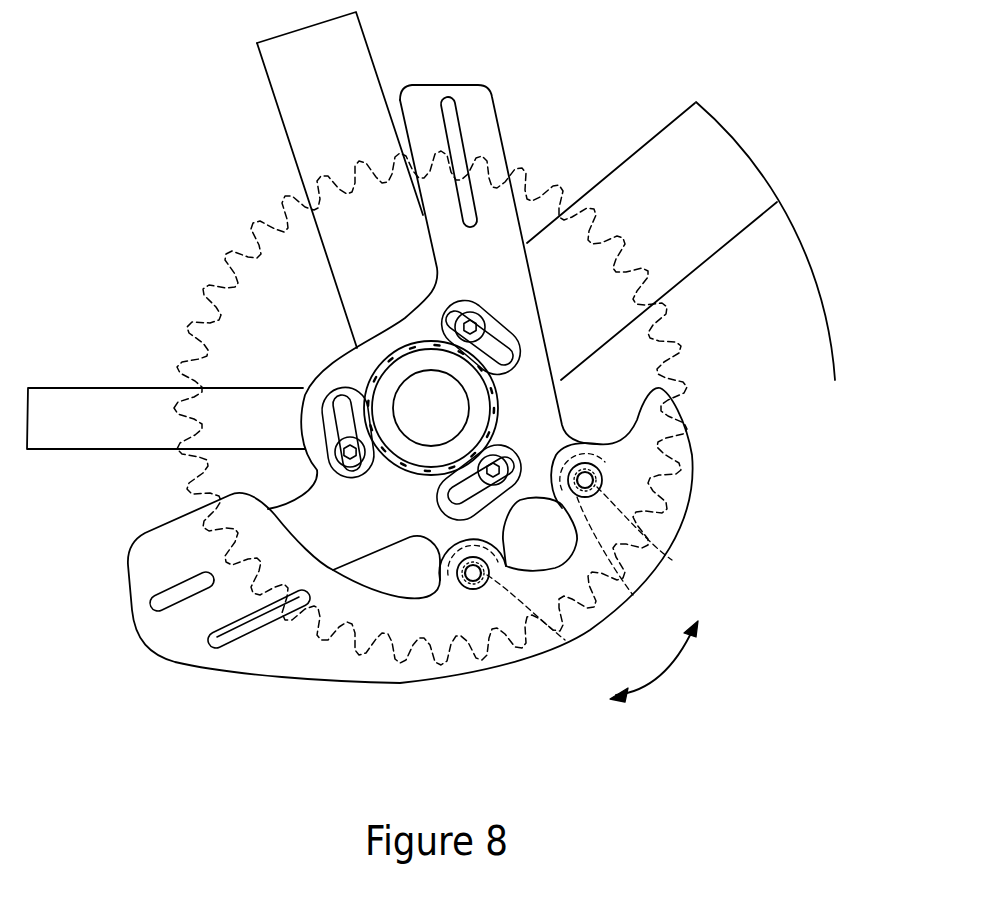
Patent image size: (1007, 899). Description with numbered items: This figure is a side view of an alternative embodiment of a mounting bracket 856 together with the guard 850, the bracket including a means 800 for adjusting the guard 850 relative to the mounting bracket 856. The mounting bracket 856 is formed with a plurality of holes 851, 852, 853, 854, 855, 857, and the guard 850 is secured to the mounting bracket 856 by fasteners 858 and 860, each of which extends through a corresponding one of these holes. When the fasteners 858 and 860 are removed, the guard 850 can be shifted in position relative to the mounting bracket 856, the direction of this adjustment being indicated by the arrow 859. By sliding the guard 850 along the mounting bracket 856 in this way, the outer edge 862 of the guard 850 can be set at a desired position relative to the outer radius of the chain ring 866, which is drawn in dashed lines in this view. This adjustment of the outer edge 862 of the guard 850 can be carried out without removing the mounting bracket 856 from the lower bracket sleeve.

The means for adjusting the guard 800 is at (530, 526).
The guard 850 is at (676, 487).
The hole 851 is at (452, 567).
The hole 852 is at (474, 590).
The hole 853 is at (565, 640).
The hole 854 is at (633, 595).
The hole 855 is at (672, 560).
The mounting bracket 856 is at (493, 122).
The hole 857 is at (595, 458).
The fastener 858 is at (480, 585).
The arrow 859 is at (673, 667).
The fastener 860 is at (600, 480).
The outer edge of the guard 862 is at (177, 665).
The chain ring 866 is at (175, 300).